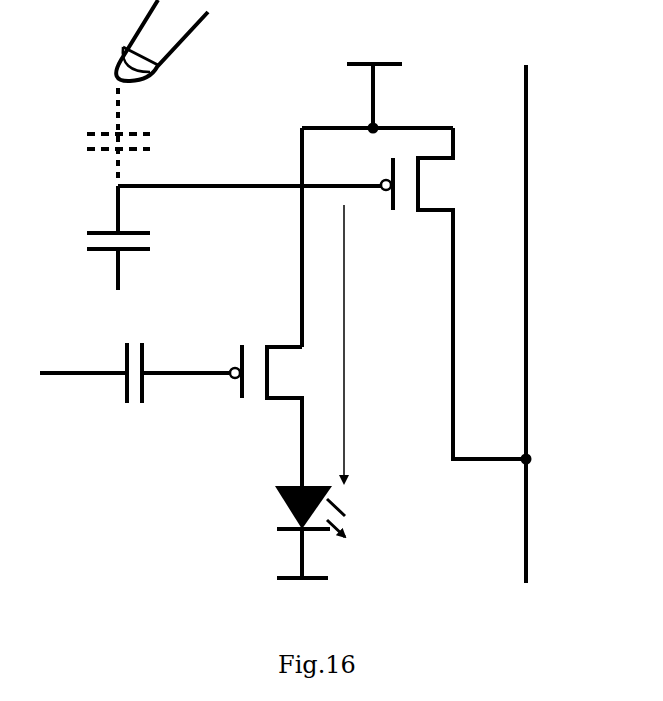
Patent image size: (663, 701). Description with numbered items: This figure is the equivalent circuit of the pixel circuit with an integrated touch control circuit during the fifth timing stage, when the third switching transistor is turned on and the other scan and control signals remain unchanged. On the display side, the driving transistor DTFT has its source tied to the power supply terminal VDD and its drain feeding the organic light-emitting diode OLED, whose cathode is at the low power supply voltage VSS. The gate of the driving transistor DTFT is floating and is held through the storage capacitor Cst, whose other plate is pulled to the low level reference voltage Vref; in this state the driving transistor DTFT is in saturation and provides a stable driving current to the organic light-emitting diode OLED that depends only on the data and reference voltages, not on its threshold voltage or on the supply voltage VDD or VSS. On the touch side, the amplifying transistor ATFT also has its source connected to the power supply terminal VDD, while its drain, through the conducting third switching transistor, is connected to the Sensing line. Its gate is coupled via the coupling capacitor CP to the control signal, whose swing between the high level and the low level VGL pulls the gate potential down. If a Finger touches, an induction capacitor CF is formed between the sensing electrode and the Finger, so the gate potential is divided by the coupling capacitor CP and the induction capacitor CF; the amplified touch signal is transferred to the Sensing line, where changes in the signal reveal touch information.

The finger Finger is at (202, 40).
The induction capacitor CF is at (135, 133).
The coupling capacitor CP is at (135, 238).
The low level of the control signal VGL is at (122, 296).
The power supply terminal VDD is at (374, 79).
The amplifying transistor ATFT is at (453, 293).
The sensing line Sensing line is at (477, 248).
The driving transistor DTFT is at (243, 415).
The storage capacitor Cst is at (136, 391).
The reference voltage Vref is at (83, 354).
The organic light-emitting diode OLED is at (348, 532).
The low power supply voltage VSS is at (302, 600).